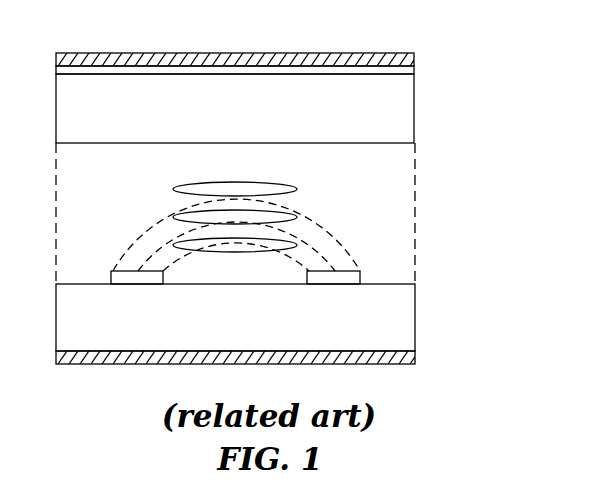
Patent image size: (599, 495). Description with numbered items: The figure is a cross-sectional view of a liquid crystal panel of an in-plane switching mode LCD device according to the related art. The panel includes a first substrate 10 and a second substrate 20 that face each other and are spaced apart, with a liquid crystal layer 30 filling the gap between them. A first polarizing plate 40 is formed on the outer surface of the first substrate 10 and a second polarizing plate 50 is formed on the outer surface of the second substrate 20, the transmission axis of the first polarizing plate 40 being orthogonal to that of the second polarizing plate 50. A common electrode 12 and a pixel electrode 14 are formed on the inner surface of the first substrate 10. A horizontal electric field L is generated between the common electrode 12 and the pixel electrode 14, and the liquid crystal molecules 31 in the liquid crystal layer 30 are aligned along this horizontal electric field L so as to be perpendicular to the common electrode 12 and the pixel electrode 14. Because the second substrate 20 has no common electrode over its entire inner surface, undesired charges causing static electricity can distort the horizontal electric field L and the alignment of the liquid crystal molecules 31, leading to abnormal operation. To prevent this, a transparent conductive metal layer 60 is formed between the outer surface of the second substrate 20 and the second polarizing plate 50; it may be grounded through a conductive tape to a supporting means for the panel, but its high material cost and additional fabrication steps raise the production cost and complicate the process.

The first substrate 10 is at (407, 313).
The common electrode 12 is at (138, 278).
The pixel electrode 14 is at (333, 278).
The second substrate 20 is at (404, 107).
The liquid crystal layer 30 is at (408, 207).
The liquid crystal molecules 31 is at (270, 183).
The first polarizing plate 40 is at (410, 357).
The second polarizing plate 50 is at (414, 57).
The transparent conductive metal layer 60 is at (405, 71).
The horizontal electric field L is at (337, 240).